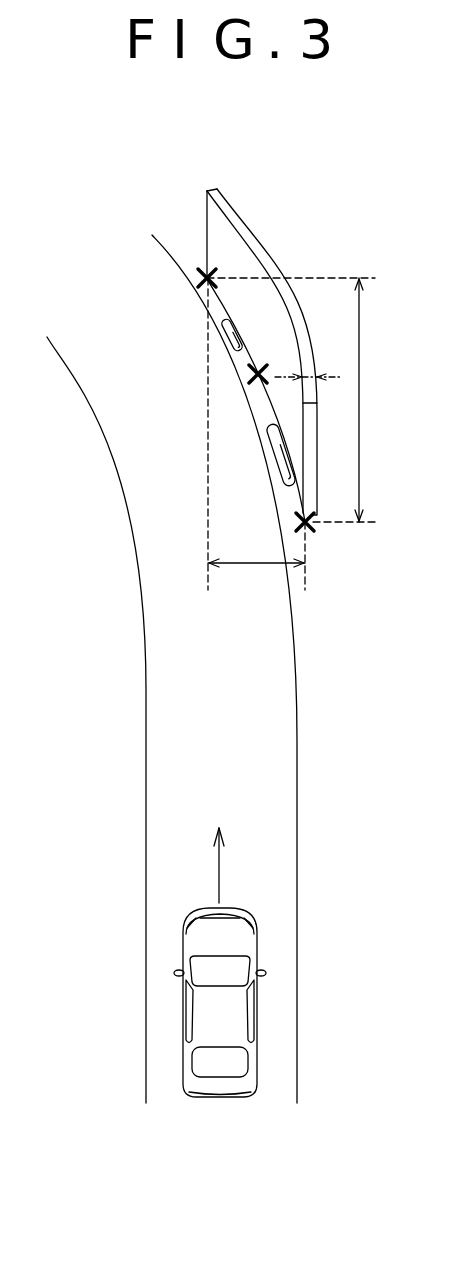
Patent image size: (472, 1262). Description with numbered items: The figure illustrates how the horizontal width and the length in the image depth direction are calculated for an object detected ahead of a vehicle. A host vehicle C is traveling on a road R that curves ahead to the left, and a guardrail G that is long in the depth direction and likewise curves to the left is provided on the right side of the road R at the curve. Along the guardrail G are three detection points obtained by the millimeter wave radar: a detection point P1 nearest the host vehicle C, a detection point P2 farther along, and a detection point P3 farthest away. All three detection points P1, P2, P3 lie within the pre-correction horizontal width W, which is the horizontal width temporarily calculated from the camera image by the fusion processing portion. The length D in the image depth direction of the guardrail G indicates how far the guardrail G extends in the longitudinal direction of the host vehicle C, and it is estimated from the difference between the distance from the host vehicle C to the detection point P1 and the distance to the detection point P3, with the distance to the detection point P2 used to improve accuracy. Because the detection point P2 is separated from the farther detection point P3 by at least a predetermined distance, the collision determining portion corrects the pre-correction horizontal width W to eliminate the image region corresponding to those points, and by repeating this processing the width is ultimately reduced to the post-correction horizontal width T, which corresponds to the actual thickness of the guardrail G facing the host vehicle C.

The road R is at (297, 798).
The guardrail G is at (265, 250).
The host vehicle C is at (237, 1098).
The detection point P1 is at (315, 527).
The detection point P2 is at (250, 377).
The detection point P3 is at (201, 270).
The length in the image depth direction D is at (296, 400).
The post-correction horizontal width T is at (308, 364).
The pre-correction horizontal width W is at (256, 437).